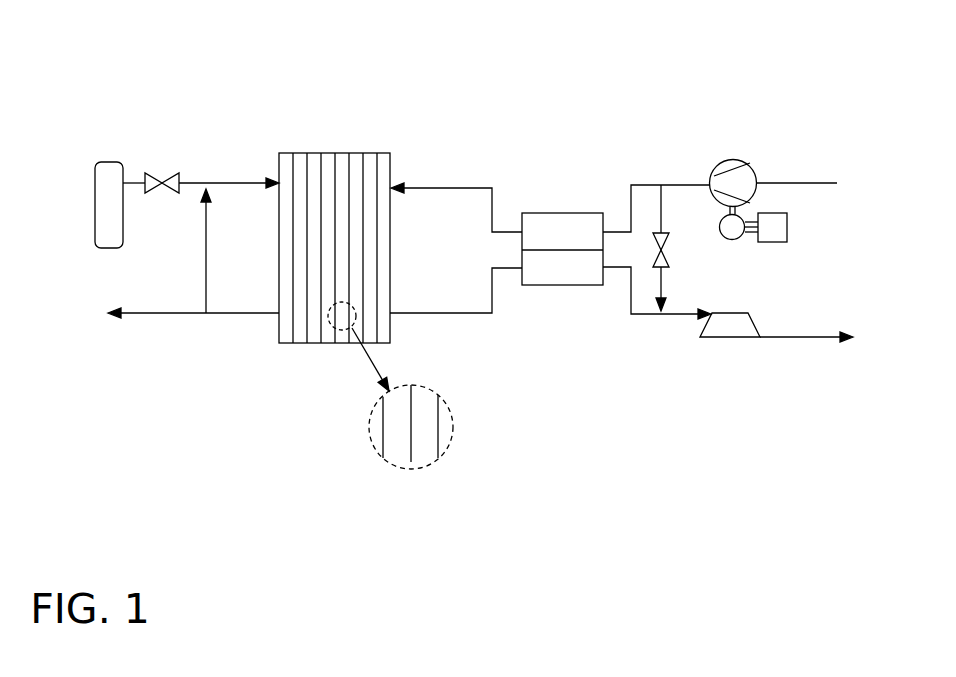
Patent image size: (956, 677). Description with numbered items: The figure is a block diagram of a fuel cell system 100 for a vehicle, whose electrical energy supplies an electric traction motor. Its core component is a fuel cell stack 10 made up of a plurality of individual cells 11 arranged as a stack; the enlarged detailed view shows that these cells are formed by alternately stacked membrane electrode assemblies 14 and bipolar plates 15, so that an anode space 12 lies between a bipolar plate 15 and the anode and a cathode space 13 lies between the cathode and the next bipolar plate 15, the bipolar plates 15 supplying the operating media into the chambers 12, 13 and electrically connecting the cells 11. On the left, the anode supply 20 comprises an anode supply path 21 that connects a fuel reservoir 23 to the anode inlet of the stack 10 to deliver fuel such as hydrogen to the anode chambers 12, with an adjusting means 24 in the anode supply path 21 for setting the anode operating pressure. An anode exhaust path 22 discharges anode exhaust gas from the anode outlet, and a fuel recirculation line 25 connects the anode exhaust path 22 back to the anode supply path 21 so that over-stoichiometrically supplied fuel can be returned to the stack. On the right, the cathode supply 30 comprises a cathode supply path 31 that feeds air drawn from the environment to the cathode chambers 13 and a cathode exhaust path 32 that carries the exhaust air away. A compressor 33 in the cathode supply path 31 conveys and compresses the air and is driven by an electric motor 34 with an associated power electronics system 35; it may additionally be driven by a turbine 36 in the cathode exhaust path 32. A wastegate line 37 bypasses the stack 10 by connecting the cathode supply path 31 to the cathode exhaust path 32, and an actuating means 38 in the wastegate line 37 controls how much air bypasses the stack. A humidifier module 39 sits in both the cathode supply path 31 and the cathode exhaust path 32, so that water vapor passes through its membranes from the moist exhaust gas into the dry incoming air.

The fuel cell system 100 is at (531, 88).
The fuel cell stack 10 is at (315, 112).
The individual cells 11 is at (312, 161).
The anode space 12 is at (396, 457).
The cathode space 13 is at (423, 447).
The membrane electrode assembly 14 is at (412, 463).
The bipolar plates 15 is at (381, 443).
The anode supply 20 is at (149, 107).
The anode supply path 21 is at (206, 182).
The anode exhaust path 22 is at (142, 315).
The fuel reservoir 23 is at (110, 173).
The adjusting means 24 is at (152, 182).
The fuel recirculation line 25 is at (205, 282).
The cathode supply 30 is at (578, 153).
The cathode supply path 31 is at (789, 180).
The cathode exhaust path 32 is at (776, 334).
The compressor 33 is at (730, 164).
The electric motor 34 is at (727, 225).
The power electronics system 35 is at (788, 229).
The turbine 36 is at (731, 326).
The wastegate line 37 is at (659, 287).
The actuating means 38 is at (664, 258).
The humidifier module 39 is at (569, 278).